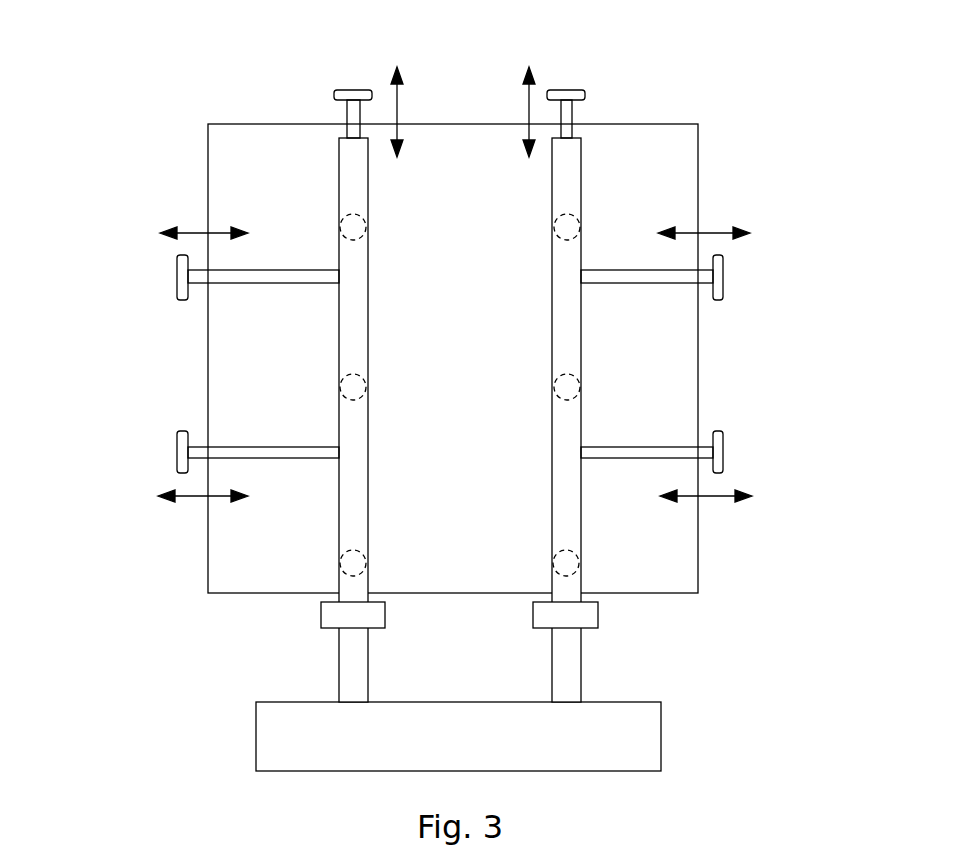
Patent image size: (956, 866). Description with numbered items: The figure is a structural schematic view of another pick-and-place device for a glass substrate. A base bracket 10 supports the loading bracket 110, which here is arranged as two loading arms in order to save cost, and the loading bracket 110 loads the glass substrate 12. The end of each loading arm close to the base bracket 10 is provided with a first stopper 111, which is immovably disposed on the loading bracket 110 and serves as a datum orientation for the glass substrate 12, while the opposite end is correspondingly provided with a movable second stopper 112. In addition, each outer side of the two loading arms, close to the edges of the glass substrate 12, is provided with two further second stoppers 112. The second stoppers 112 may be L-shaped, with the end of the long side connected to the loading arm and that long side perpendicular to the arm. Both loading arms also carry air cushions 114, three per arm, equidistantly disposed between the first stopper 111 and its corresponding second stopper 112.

The base bracket 10 is at (645, 737).
The glass substrate 12 is at (647, 149).
The loading bracket 110 is at (567, 205).
The first stopper 111 is at (354, 610).
The second stopper 112 is at (353, 90).
The air cushion 114 is at (353, 563).